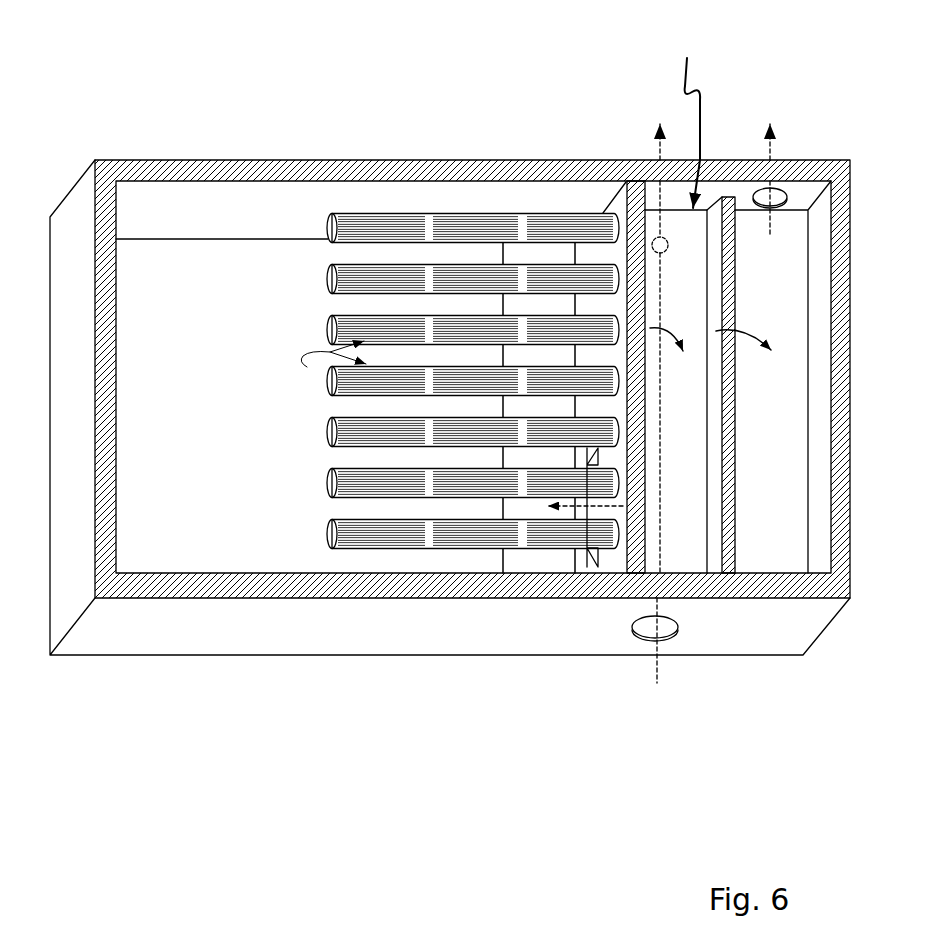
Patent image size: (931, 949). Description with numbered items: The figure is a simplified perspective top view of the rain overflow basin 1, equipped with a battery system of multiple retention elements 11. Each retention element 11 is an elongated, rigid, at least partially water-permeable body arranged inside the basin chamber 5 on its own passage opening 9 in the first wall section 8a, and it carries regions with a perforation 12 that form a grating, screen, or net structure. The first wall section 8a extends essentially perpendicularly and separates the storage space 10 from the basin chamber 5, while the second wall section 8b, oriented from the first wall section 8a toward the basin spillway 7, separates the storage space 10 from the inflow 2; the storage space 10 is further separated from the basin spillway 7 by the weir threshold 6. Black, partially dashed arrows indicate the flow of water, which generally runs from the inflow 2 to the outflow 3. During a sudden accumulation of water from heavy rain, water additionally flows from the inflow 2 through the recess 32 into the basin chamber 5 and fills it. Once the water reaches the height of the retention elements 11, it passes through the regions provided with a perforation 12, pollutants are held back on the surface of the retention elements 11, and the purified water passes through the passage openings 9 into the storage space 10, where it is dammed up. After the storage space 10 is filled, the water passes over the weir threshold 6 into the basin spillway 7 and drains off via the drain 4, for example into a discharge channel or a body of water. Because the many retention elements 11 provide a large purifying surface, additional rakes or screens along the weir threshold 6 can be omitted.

The rain overflow basin 1 is at (422, 32).
The inflow 2 is at (636, 638).
The outflow 3 is at (657, 238).
The drain 4 is at (782, 186).
The basin chamber 5 is at (143, 556).
The weir threshold 6 is at (728, 197).
The basin spillway 7 is at (772, 556).
The first wall section 8a is at (627, 207).
The second wall section 8b is at (679, 537).
The passage opening 9 is at (460, 307).
The storage space 10 is at (685, 111).
The retention element 11 is at (433, 213).
The perforation 12 is at (364, 222).
The recess 32 is at (585, 558).